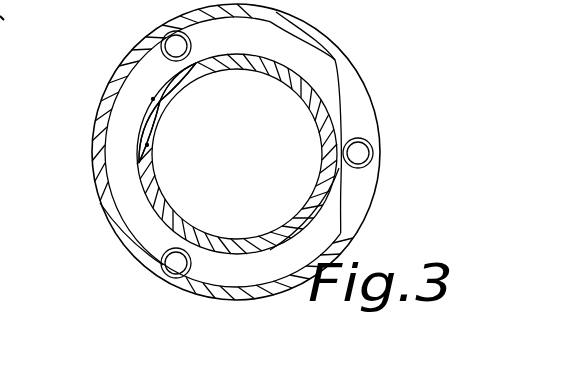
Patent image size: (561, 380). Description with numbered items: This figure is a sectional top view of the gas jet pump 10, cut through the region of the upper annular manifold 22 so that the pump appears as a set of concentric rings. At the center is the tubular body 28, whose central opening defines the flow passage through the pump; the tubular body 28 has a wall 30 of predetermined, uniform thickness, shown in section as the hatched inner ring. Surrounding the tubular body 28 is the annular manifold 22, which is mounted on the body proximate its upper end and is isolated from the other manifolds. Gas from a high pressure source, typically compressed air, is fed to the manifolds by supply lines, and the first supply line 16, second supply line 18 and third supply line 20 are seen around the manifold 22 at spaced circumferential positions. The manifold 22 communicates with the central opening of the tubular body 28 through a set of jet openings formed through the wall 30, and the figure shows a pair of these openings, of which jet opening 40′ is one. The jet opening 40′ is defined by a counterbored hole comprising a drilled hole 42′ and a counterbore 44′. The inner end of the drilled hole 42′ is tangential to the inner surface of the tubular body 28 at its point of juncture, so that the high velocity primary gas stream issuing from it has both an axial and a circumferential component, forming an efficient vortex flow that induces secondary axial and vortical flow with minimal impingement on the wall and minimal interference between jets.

The gas jet pump 10 is at (108, 250).
The first supply line 16 is at (370, 146).
The second supply line 18 is at (168, 272).
The third supply line 20 is at (165, 36).
The annular manifold 22 is at (313, 38).
The tubular body 28 is at (320, 95).
The wall 30 is at (340, 115).
The jet opening 40′ is at (150, 98).
The drilled hole 42′ is at (165, 92).
The counterbore 44′ is at (158, 108).